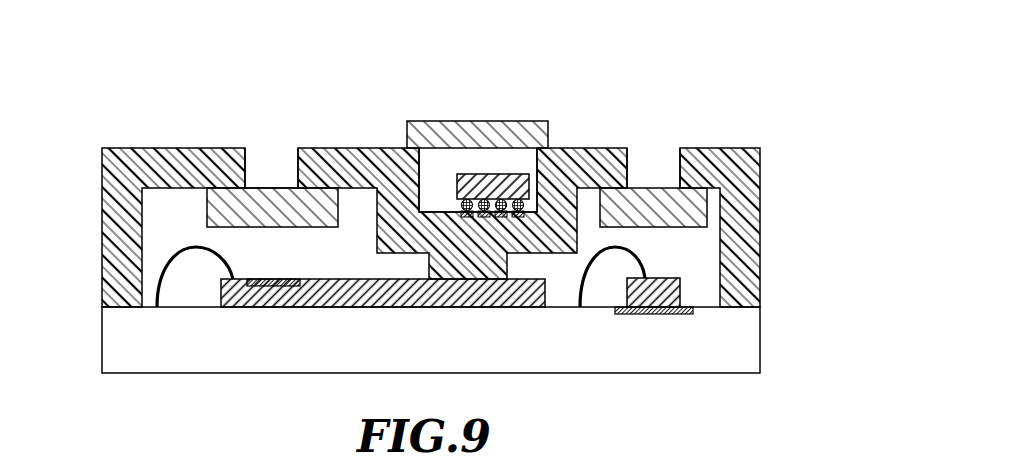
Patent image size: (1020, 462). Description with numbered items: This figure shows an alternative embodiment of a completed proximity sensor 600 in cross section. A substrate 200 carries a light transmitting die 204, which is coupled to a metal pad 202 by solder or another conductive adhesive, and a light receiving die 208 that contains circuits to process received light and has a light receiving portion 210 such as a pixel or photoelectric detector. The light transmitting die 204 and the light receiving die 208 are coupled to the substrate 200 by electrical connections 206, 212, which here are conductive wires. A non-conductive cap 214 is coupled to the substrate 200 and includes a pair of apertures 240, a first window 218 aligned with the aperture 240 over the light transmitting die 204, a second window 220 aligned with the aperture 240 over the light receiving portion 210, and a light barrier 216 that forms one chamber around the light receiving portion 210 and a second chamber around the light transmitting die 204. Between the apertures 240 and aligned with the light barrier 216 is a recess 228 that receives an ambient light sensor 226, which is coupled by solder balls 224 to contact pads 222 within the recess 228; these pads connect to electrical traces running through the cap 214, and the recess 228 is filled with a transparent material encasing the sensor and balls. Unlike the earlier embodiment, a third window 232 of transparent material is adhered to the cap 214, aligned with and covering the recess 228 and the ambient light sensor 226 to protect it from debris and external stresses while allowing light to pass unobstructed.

The completed proximity sensor 600 is at (743, 81).
The substrate 200 is at (733, 342).
The metal pad 202 is at (683, 312).
The light transmitting die 204 is at (667, 290).
The electrical connection 206 is at (638, 249).
The light receiving die 208 is at (333, 290).
The light receiving portion 210 is at (262, 283).
The electrical connection 212 is at (175, 253).
The cap 214 is at (127, 169).
The light barrier 216 is at (470, 262).
The first window 218 is at (661, 197).
The second window 220 is at (277, 202).
The contact pads 222 is at (463, 228).
The solder balls 224 is at (460, 205).
The ambient light sensor 226 is at (506, 178).
The recess 228 is at (480, 163).
The third window 232 is at (455, 140).
The apertures 240 is at (262, 154).